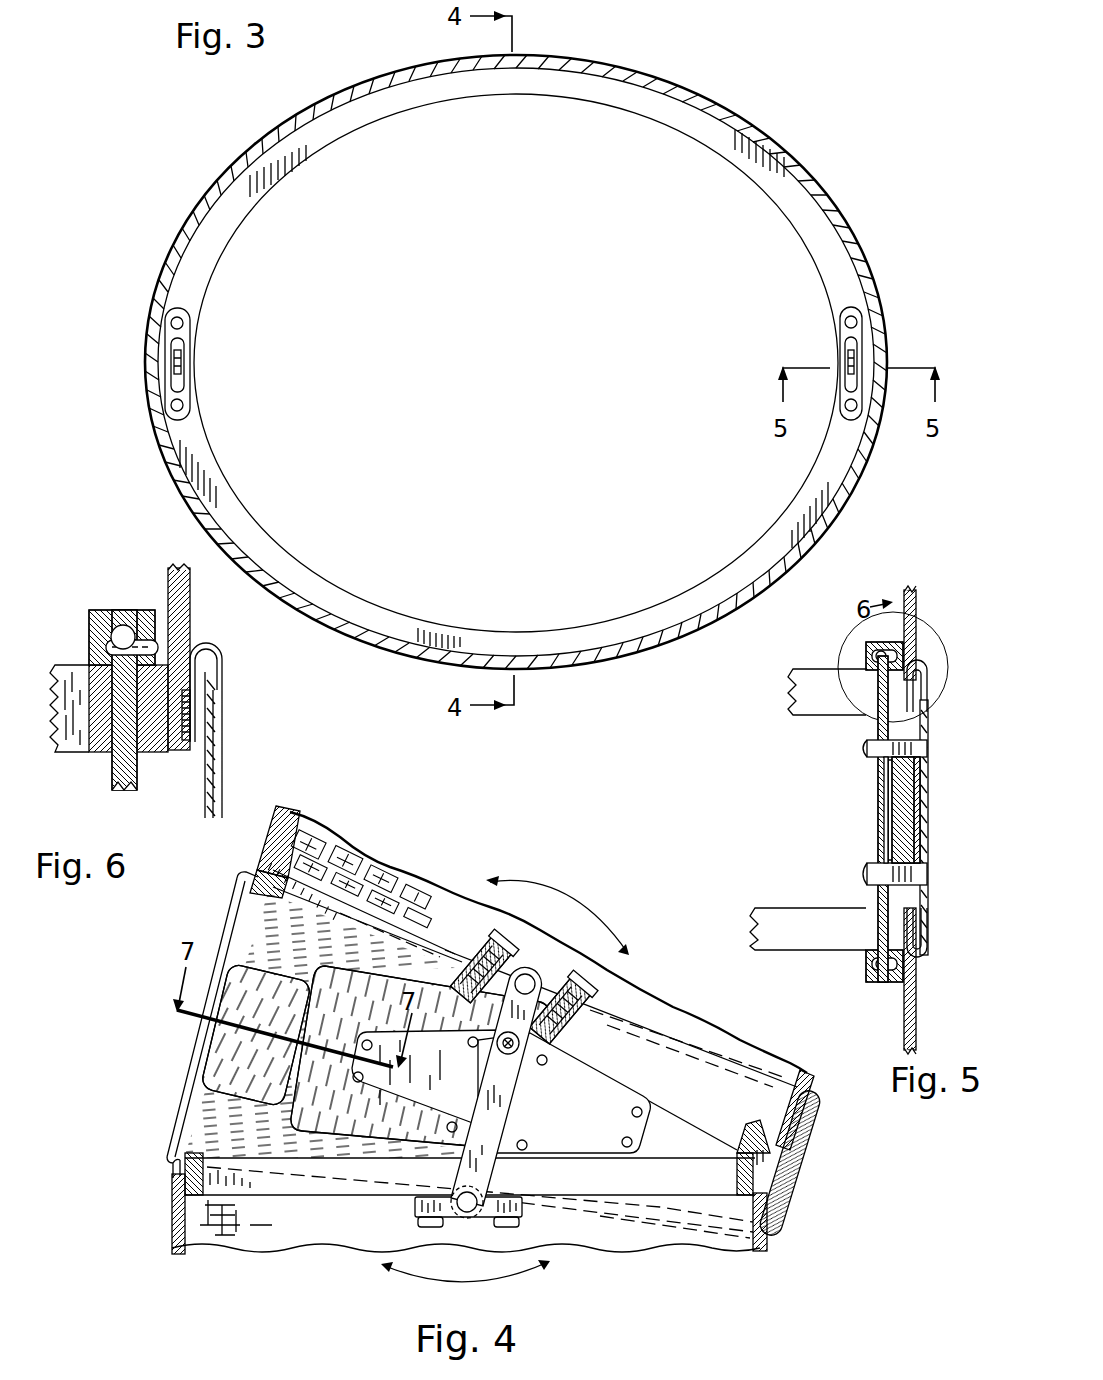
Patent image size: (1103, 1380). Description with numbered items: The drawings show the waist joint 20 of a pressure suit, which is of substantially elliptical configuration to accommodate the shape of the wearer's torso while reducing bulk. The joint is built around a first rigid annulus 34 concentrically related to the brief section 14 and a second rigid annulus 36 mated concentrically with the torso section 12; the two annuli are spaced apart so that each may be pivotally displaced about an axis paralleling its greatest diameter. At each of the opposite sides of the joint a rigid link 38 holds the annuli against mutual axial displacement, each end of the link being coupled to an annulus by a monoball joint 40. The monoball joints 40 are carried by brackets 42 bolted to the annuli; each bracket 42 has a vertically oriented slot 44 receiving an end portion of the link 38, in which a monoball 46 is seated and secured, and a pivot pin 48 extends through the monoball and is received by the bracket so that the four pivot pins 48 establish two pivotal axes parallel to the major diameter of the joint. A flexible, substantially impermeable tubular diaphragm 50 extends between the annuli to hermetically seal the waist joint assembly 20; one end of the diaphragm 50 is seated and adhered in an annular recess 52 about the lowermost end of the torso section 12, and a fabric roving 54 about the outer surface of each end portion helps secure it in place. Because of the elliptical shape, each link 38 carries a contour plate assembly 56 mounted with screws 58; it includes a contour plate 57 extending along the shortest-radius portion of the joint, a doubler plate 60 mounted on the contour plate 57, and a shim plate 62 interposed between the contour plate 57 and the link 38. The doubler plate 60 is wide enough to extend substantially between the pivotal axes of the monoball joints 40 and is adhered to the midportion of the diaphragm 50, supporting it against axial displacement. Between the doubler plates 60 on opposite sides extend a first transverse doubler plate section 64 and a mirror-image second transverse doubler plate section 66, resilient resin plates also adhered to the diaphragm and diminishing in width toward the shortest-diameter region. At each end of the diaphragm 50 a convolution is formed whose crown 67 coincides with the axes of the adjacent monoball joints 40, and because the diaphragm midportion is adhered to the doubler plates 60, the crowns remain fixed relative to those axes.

In FIG. 3, the torso section 12 is at (797, 183).
In FIG. 6, the torso section 12 is at (190, 608).
In FIG. 5, the torso section 12 is at (917, 605).
In FIG. 4, the torso section 12 is at (292, 812).
In FIG. 5, the brief section 14 is at (917, 990).
In FIG. 4, the brief section 14 is at (173, 1222).
In FIG. 3, the waist joint 20 is at (670, 648).
In FIG. 5, the first rigid annulus 34 is at (793, 920).
In FIG. 4, the first rigid annulus 34 is at (227, 1183).
In FIG. 3, the second rigid annulus 36 is at (818, 172).
In FIG. 6, the second rigid annulus 36 is at (86, 742).
In FIG. 5, the second rigid annulus 36 is at (810, 706).
In FIG. 4, the second rigid annulus 36 is at (320, 842).
In FIG. 3, the rigid link 38 is at (186, 362).
In FIG. 6, the rigid link 38 is at (118, 782).
In FIG. 5, the rigid link 38 is at (882, 800).
In FIG. 4, the rigid link 38 is at (482, 1093).
In FIG. 3, the monoball joint 40 is at (146, 346).
In FIG. 6, the monoball joint 40 is at (120, 604).
In FIG. 5, the monoball joint 40 is at (852, 648).
In FIG. 4, the monoball joint 40 is at (538, 958).
In FIG. 3, the bracket 42 is at (188, 390).
In FIG. 6, the bracket 42 is at (94, 615).
In FIG. 3, the vertically oriented slot 44 is at (196, 338).
In FIG. 6, the monoball 46 is at (131, 633).
In FIG. 6, the pivot pin 48 is at (160, 647).
In FIG. 5, the pivot pin 48 is at (897, 655).
In FIG. 3, the diaphragm 50 is at (787, 168).
In FIG. 6, the diaphragm 50 is at (222, 780).
In FIG. 5, the diaphragm 50 is at (930, 800).
In FIG. 4, the diaphragm 50 is at (236, 911).
In FIG. 6, the annular recess 52 is at (187, 746).
In FIG. 6, the fabric roving 54 is at (218, 672).
In FIG. 5, the fabric roving 54 is at (925, 672).
In FIG. 4, the fabric roving 54 is at (172, 1175).
In FIG. 5, the contour plate assembly 56 is at (900, 789).
In FIG. 4, the contour plate assembly 56 is at (453, 1068).
In FIG. 5, the contour plate 57 is at (928, 845).
In FIG. 5, the screw 58 is at (866, 748).
In FIG. 4, the screw 58 is at (510, 1056).
In FIG. 5, the doubler plate 60 is at (925, 840).
In FIG. 4, the doubler plate 60 is at (672, 1270).
In FIG. 5, the shim plate 62 is at (890, 815).
In FIG. 4, the first transverse doubler plate section 64 is at (216, 1043).
In FIG. 4, the second transverse doubler plate section 66 is at (796, 1160).
In FIG. 4, the crown 67 is at (250, 884).